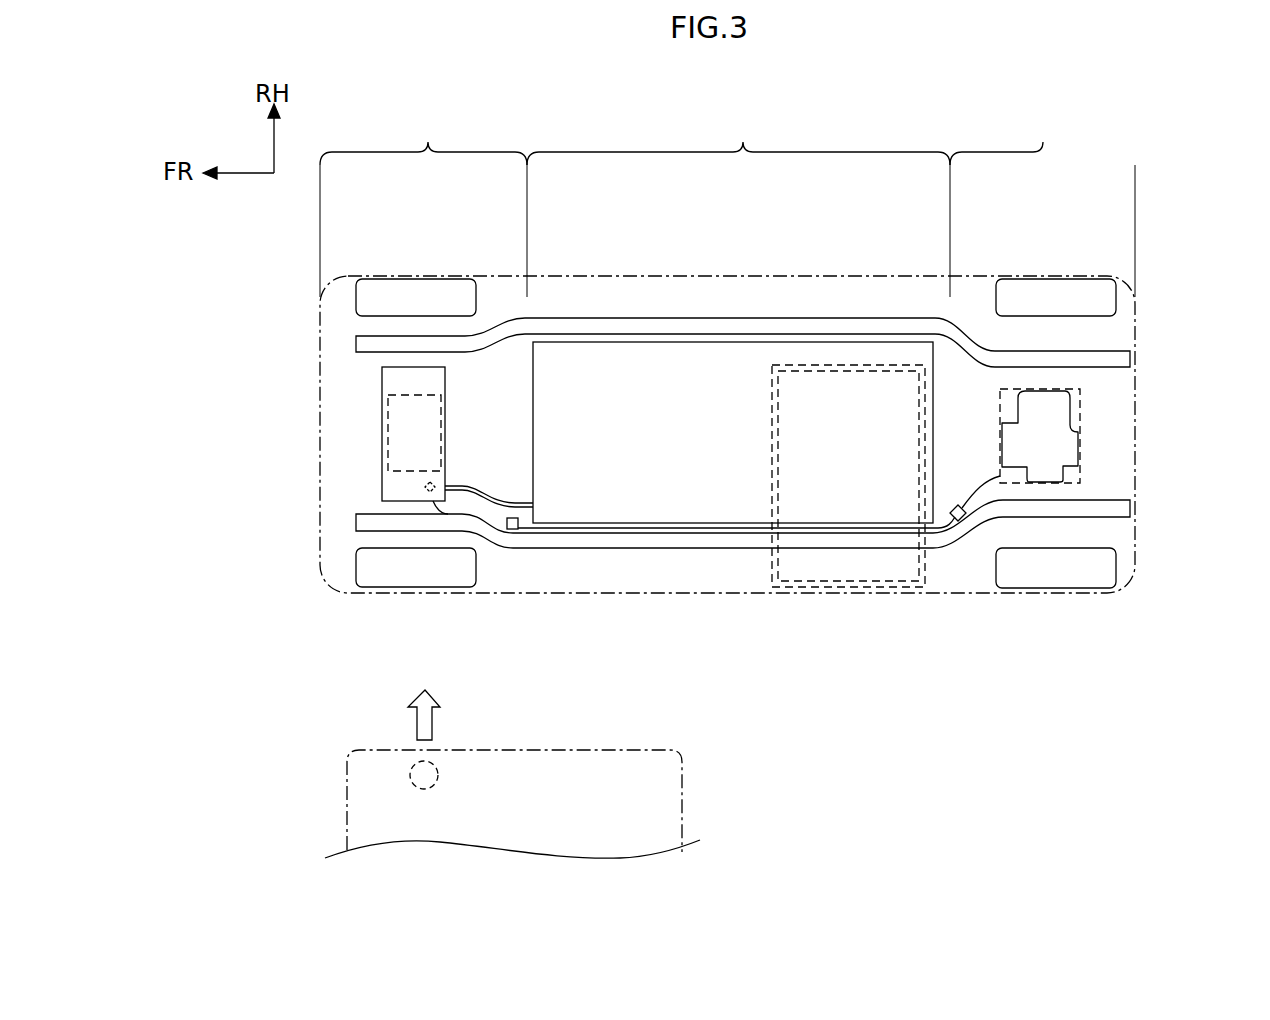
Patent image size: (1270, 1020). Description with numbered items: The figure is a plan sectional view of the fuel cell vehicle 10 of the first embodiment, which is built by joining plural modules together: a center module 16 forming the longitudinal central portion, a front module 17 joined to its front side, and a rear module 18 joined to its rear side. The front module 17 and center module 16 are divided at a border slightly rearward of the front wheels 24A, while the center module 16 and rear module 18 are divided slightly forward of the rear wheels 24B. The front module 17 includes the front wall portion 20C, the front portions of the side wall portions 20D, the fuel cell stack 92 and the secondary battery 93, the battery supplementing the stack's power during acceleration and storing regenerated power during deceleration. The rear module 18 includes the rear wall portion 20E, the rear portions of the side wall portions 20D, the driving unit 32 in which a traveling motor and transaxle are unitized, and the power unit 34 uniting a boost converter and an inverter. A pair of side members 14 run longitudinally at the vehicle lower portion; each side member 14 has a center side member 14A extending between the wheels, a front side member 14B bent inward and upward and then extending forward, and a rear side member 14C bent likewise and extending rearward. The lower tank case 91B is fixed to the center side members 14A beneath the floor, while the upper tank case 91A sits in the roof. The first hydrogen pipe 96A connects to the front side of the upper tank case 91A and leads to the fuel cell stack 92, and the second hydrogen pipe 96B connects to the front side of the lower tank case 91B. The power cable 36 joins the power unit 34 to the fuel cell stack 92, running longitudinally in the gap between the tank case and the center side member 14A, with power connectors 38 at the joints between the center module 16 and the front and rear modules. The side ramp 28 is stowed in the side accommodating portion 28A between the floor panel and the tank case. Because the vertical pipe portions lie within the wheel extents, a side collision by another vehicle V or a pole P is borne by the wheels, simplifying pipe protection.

The vehicle 10 is at (943, 110).
The side member 14 is at (585, 322).
The center side member 14A is at (680, 327).
The front side member 14B is at (425, 343).
The rear side member 14C is at (1015, 358).
The center module 16 is at (738, 205).
The front module 17 is at (423, 205).
The rear module 18 is at (1042, 205).
The front wall portion 20C is at (320, 385).
The side wall portion 20D is at (885, 275).
The rear wall portion 20E is at (1137, 352).
The front wheel 24A is at (387, 297).
The rear wheel 24B is at (1050, 295).
The side ramp 28 is at (848, 385).
The side accommodating portion 28A is at (790, 387).
The driving unit 32 is at (1042, 422).
The power unit 34 is at (1082, 475).
The power cable 36 is at (735, 548).
The power connector 38 is at (512, 532).
The upper tank case 91A is at (705, 512).
The lower tank case 91B is at (616, 514).
The fuel cell stack 92 is at (393, 485).
The secondary battery 93 is at (405, 430).
The first hydrogen pipe 96A is at (430, 492).
The second hydrogen pipe 96B is at (465, 492).
The pole P is at (437, 776).
The another vehicle V is at (684, 778).